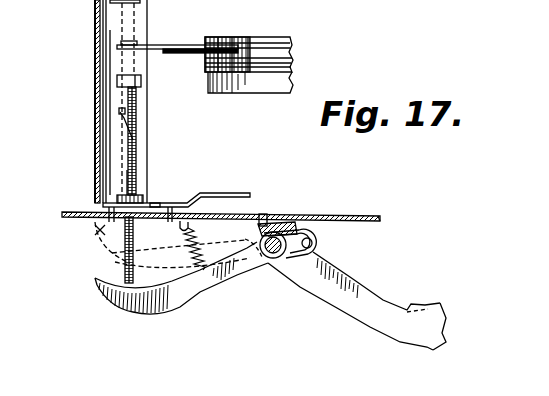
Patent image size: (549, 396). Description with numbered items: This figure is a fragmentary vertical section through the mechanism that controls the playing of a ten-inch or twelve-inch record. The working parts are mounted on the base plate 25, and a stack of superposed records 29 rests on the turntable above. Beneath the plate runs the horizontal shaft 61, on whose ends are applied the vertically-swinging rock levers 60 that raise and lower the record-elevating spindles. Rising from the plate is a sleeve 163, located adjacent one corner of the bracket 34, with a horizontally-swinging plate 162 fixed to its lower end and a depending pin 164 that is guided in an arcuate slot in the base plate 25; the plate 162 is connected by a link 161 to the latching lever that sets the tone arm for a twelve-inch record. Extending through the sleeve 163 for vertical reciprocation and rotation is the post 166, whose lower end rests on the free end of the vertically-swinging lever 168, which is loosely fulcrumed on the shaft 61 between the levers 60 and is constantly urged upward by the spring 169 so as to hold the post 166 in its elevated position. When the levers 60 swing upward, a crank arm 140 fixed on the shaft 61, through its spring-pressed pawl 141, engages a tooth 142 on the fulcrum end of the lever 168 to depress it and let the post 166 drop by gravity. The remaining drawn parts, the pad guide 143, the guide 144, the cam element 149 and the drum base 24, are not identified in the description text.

The vertical post 34 is at (94, 73).
The cam 149 is at (122, 124).
The guide 144 is at (130, 180).
The rod 143 is at (137, 161).
The pin 164 is at (167, 44).
The sleeve 163 is at (142, 96).
The horizontally-swinging plate 162 is at (64, 217).
The post 166 is at (127, 263).
The vertically-swinging lever 168 is at (178, 303).
The link 161 is at (233, 190).
The spring 169 is at (203, 240).
The bolt 142 is at (263, 214).
The bracket 141 is at (286, 224).
The link 140 is at (313, 245).
The base plate 25 is at (382, 216).
The records 29 is at (287, 47).
The drum base 24 is at (268, 87).
The horizontal shaft 61 is at (268, 266).
The rock levers 60 is at (377, 320).